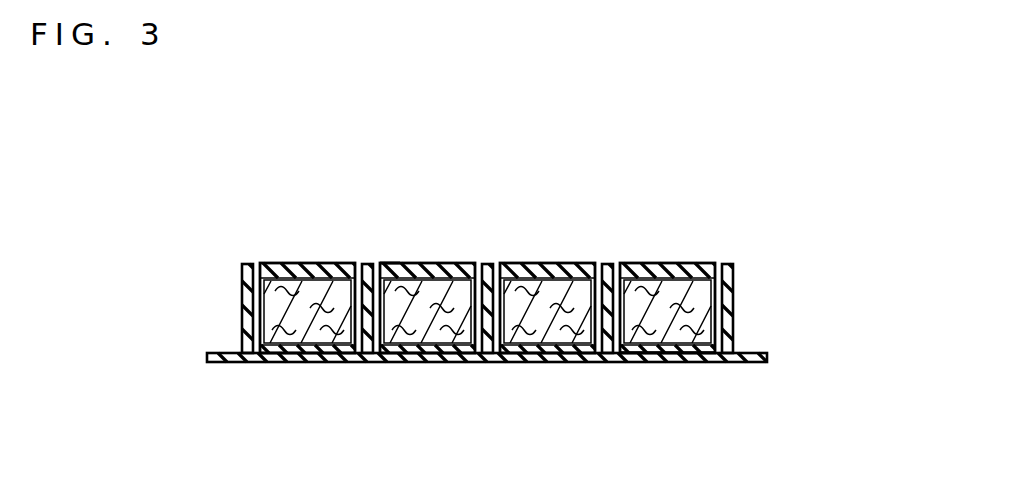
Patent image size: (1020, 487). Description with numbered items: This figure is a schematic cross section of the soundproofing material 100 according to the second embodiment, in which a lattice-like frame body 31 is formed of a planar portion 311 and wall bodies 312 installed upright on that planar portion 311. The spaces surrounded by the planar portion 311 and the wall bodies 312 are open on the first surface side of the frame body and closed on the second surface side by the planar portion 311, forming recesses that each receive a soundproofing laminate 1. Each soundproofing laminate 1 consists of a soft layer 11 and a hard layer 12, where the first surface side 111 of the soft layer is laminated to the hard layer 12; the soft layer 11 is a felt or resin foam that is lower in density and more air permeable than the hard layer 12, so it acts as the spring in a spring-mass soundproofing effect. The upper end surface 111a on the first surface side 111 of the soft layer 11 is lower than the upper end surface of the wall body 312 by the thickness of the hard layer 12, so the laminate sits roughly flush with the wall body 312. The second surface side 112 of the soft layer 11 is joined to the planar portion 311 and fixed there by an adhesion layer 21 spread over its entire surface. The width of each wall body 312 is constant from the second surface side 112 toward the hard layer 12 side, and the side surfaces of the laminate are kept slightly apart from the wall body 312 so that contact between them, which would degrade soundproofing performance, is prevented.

The soundproofing material 100 is at (690, 160).
The soundproofing laminate 1 is at (607, 157).
The soft layer 11 is at (520, 302).
The hard layer 12 is at (552, 270).
The first surface side of the soft layer 111 is at (435, 263).
The upper end surface 111a is at (403, 263).
The second surface side of the soft layer 112 is at (445, 343).
The adhesion layer 21 is at (650, 350).
The lattice-like frame body 31 is at (863, 250).
The planar portion 311 is at (707, 363).
The wall body 312 is at (366, 262).